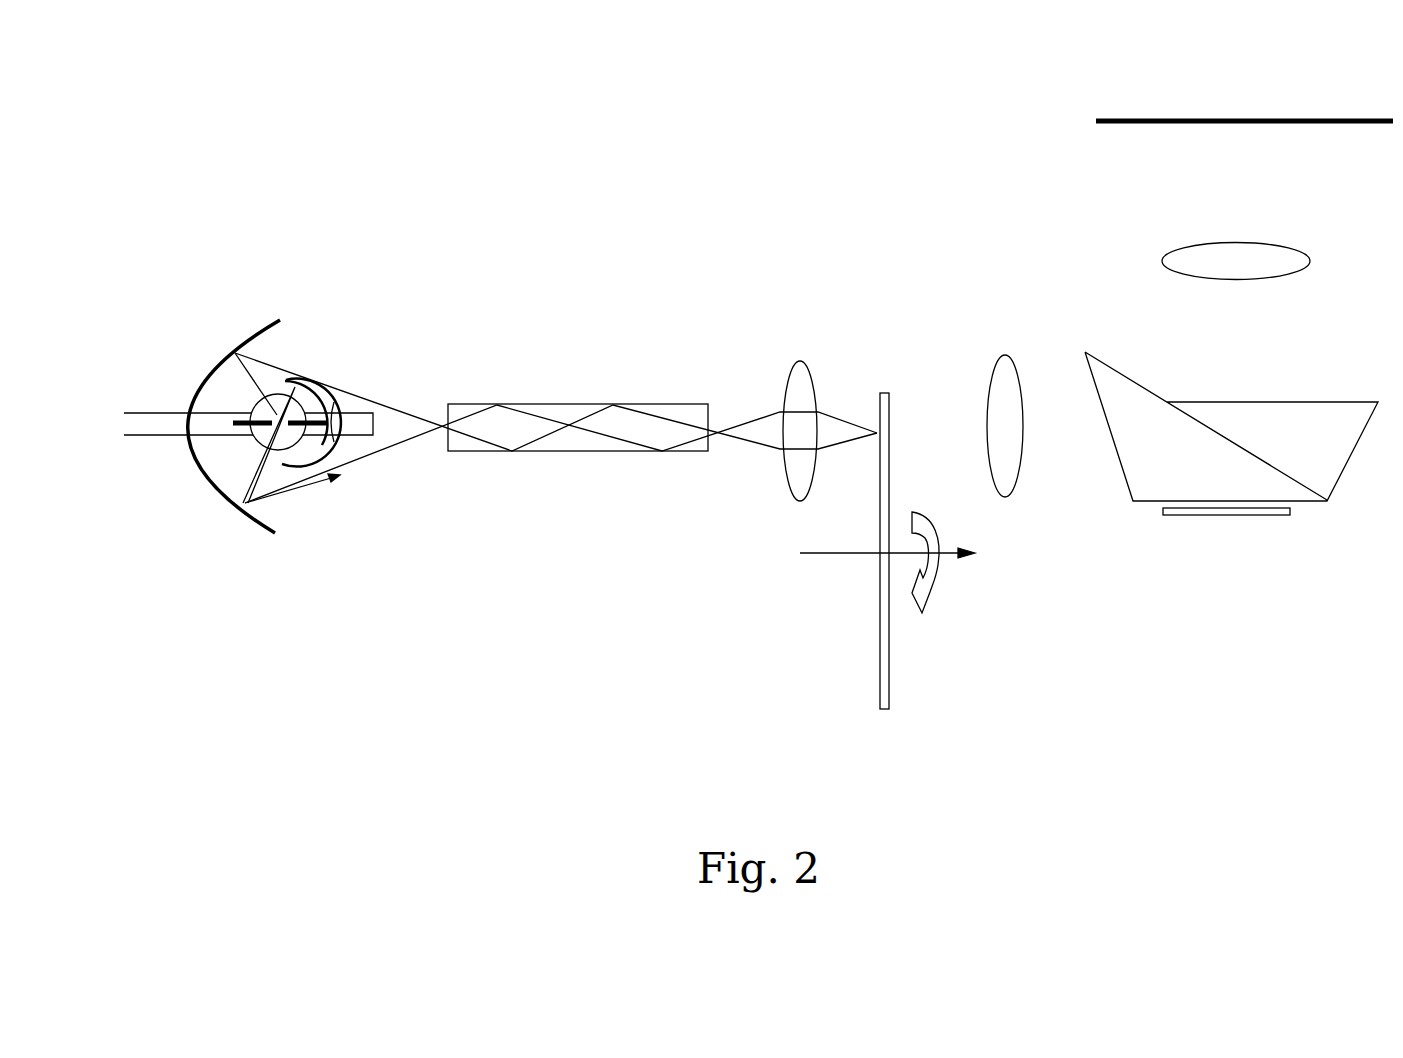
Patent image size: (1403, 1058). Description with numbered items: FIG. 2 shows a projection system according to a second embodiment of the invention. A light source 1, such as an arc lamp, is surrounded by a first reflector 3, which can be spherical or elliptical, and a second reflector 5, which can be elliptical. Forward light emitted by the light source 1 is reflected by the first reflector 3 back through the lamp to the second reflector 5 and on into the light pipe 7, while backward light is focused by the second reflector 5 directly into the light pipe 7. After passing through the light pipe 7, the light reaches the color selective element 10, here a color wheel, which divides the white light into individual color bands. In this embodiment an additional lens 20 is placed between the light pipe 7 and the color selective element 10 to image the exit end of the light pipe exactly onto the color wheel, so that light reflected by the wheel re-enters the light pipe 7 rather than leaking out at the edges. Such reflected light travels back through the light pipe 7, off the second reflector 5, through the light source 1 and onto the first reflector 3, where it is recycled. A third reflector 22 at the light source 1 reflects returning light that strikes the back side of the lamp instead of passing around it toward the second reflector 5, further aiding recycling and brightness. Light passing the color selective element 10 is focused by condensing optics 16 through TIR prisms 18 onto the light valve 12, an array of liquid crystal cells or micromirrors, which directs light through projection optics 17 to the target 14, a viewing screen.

The light source 1 is at (87, 508).
The first reflector 3 is at (313, 387).
The second reflector 5 is at (237, 503).
The light pipe 7 is at (542, 460).
The color selective element 10 is at (895, 690).
The light valve 12 is at (1232, 517).
The target 14 is at (1175, 120).
The condensing optics 16 is at (998, 355).
The projection optics 17 is at (1313, 262).
The TIR prisms 18 is at (1122, 488).
The additional lens 20 is at (795, 360).
The third reflector 22 is at (338, 410).